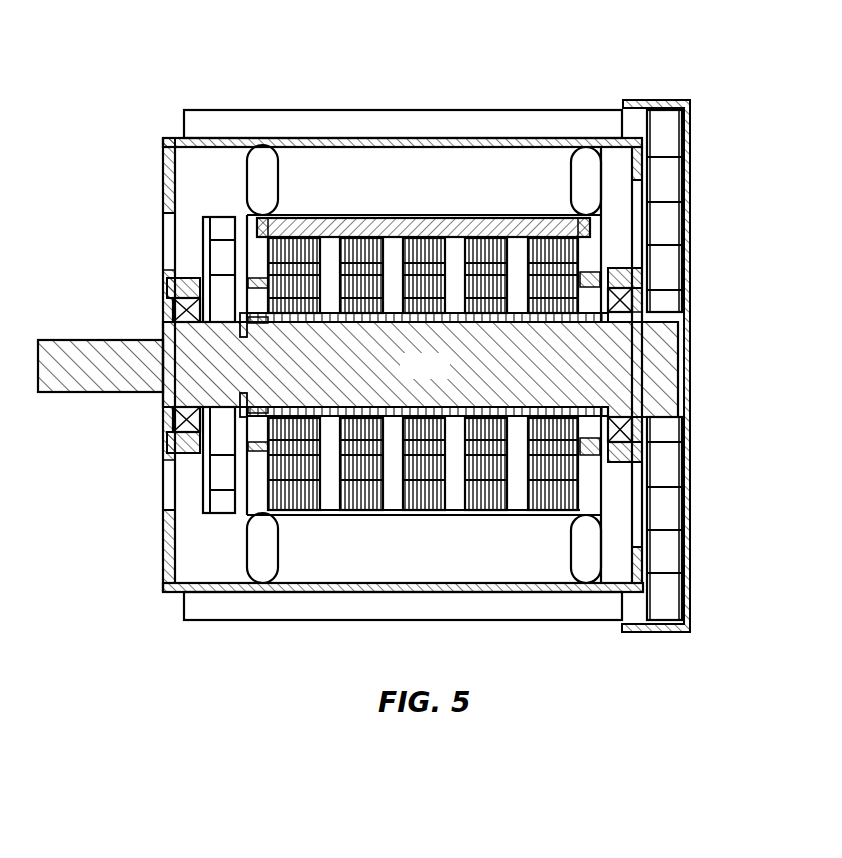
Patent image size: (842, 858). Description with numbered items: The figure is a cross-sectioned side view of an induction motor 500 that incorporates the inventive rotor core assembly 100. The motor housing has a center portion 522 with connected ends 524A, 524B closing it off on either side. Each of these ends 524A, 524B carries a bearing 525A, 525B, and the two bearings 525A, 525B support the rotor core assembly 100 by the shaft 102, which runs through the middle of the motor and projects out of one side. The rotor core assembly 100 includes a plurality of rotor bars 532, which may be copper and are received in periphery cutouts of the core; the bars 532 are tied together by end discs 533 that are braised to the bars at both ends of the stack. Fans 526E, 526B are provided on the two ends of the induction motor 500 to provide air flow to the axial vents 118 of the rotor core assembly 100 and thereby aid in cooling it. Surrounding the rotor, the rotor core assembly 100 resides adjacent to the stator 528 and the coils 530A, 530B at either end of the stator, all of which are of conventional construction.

The induction motor 500 is at (246, 62).
The rotor core assembly 100 is at (431, 203).
The shaft 102 is at (358, 365).
The axial vents 118 is at (240, 292).
The center portion 522 is at (387, 143).
The end 524A is at (163, 186).
The end 524B is at (637, 163).
The bearing 525A is at (166, 313).
The bearing 525B is at (620, 315).
The fan 526B is at (665, 228).
The fan 526E is at (218, 499).
The stator 528 is at (424, 365).
The coil 530A is at (265, 165).
The coil 530B is at (583, 163).
The rotor bars 532 is at (404, 226).
The end discs 533 is at (259, 222).